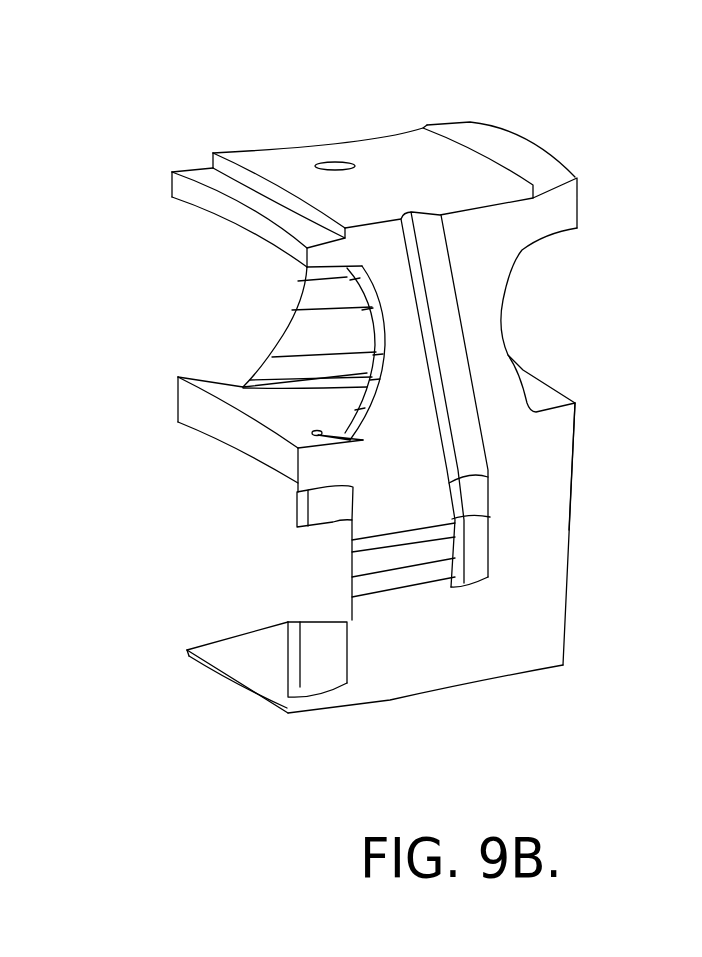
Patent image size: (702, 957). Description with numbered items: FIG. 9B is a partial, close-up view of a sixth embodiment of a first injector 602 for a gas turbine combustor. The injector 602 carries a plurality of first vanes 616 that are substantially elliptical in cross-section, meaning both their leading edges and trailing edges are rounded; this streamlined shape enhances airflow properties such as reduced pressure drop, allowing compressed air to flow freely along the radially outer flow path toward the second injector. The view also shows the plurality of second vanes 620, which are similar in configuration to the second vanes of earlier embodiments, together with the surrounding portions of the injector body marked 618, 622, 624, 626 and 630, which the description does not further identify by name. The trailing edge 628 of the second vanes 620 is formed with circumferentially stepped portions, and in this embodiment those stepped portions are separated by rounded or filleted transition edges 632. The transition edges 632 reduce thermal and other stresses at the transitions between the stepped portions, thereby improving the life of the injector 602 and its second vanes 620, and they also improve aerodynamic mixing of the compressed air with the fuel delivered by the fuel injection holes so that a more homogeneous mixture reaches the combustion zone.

The first injector 602 is at (264, 125).
The first vanes 616 is at (307, 297).
The concave seat surface 618 is at (337, 337).
The second vanes 620 is at (550, 450).
The lower shelf 622 is at (253, 500).
The rib / aperture 624 is at (340, 162).
The cross bars 626 is at (420, 537).
The trailing edge 628 is at (297, 657).
The side wall 630 is at (567, 582).
The rounded or filleted transition edges 632 is at (337, 523).